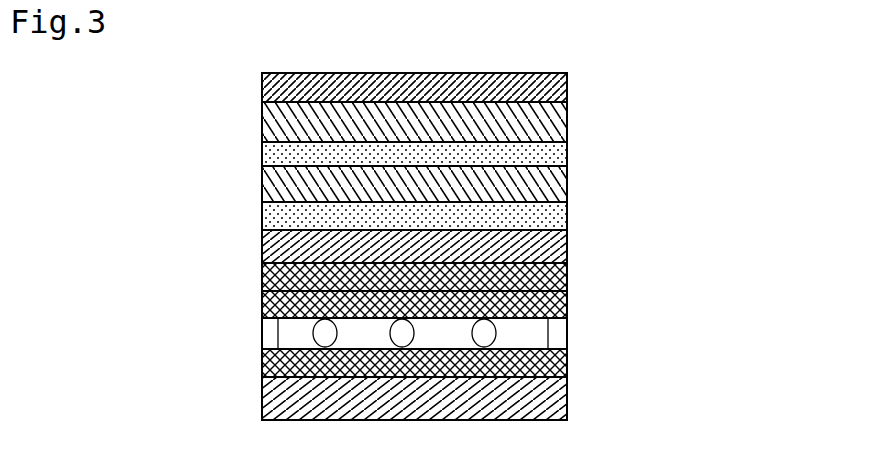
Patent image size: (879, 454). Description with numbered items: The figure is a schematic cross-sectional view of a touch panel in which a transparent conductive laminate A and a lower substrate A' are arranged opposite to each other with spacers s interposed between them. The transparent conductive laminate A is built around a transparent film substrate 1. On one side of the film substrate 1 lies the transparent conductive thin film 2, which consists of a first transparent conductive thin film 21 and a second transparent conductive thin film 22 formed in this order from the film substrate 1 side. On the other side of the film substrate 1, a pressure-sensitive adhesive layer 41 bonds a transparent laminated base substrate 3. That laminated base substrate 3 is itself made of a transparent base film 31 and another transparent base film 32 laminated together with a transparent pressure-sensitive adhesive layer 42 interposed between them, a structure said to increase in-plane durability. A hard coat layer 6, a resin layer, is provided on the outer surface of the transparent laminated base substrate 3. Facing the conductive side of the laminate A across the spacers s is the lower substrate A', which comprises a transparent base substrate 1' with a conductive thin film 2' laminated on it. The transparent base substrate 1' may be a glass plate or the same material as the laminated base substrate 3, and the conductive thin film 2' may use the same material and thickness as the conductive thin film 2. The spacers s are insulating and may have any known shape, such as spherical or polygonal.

The hard coat layer 6 is at (567, 92).
The transparent laminated base substrate 3 is at (698, 109).
The transparent base film 32 is at (567, 128).
The transparent pressure-sensitive adhesive layer 42 is at (550, 158).
The transparent base film 31 is at (567, 190).
The pressure-sensitive adhesive layer 41 is at (550, 219).
The transparent film substrate 1 is at (467, 246).
The transparent conductive thin film 2 is at (501, 291).
The first transparent conductive thin film 21 is at (567, 278).
The second transparent conductive thin film 22 is at (567, 307).
The spacers s is at (488, 338).
The transparent conductive laminate A is at (546, 195).
The lower substrate A' is at (502, 385).
The conductive thin film 2' is at (468, 363).
The transparent base substrate 1' is at (469, 398).